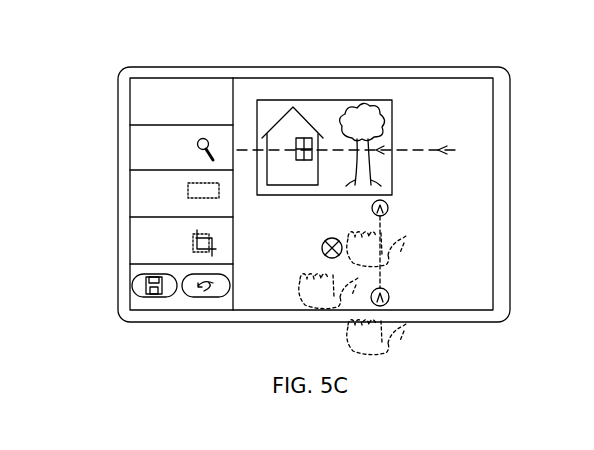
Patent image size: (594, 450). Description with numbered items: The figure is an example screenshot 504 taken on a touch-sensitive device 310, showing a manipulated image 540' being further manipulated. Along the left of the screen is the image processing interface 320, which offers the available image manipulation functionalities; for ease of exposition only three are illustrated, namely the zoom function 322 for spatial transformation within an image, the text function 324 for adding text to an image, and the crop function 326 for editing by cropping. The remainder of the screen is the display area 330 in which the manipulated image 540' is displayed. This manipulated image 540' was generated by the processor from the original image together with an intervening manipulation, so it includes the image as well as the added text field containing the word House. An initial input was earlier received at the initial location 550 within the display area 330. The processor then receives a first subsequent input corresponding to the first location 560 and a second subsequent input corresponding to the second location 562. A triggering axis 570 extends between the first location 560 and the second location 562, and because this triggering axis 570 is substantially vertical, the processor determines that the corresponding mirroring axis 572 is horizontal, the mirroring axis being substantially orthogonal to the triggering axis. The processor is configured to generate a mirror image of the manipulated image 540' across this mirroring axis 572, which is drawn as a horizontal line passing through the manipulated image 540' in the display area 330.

The screenshot 504 is at (443, 37).
The touch-sensitive device 310 is at (200, 67).
The image processing interface 320 is at (155, 84).
The zoom function 322 is at (133, 150).
The text function 324 is at (133, 196).
The crop function 326 is at (133, 239).
The display area 330 is at (480, 100).
The manipulated image 540' is at (324, 111).
The initial location 550 is at (323, 253).
The first location 560 is at (391, 296).
The second location 562 is at (389, 205).
The triggering axis 570 is at (383, 272).
The mirroring axis 572 is at (447, 150).